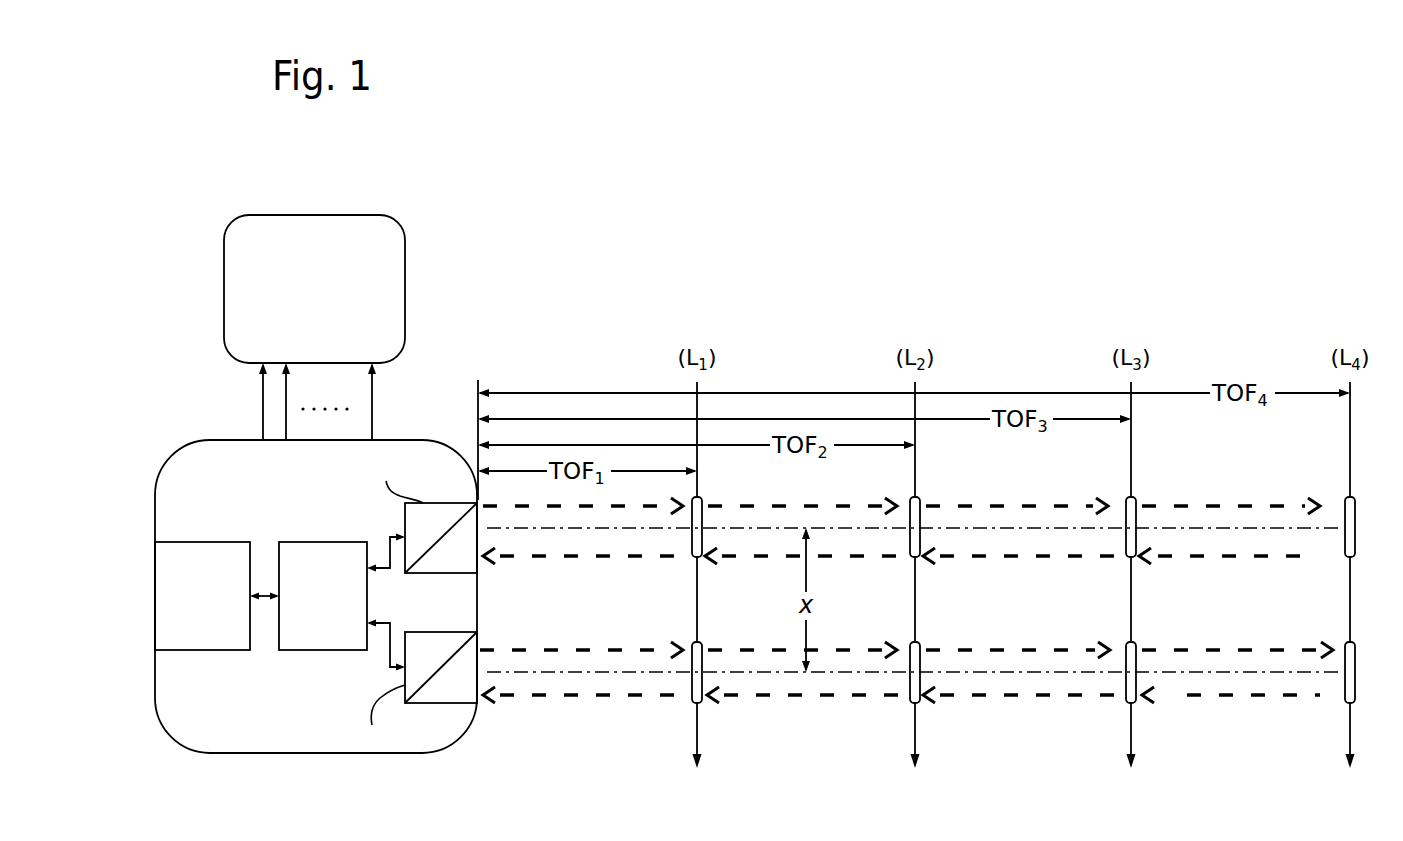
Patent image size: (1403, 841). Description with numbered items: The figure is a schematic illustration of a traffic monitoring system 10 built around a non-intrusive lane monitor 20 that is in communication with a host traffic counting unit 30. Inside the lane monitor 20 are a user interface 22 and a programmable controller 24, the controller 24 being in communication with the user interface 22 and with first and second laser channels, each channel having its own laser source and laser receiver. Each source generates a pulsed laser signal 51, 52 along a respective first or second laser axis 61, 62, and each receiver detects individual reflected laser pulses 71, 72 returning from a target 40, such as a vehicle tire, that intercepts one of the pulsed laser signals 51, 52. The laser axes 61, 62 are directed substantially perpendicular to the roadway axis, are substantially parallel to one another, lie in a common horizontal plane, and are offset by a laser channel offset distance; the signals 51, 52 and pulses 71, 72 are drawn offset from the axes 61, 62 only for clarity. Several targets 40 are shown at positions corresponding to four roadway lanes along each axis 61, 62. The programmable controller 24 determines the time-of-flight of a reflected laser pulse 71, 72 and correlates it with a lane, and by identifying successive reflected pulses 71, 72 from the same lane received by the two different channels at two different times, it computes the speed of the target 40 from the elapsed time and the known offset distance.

The traffic monitoring system 10 is at (489, 197).
The lane monitor 20 is at (400, 440).
The user interface 22 is at (202, 542).
The programmable controller 24 is at (300, 542).
The host traffic counting unit 30 is at (357, 215).
The target 40 is at (1350, 497).
The pulsed laser signal 51 is at (1037, 503).
The pulsed laser signal 52 is at (1045, 650).
The first laser axis 61 is at (1190, 528).
The second laser axis 62 is at (1193, 672).
The reflected laser pulse 71 is at (1264, 553).
The reflected laser pulse 72 is at (1268, 692).